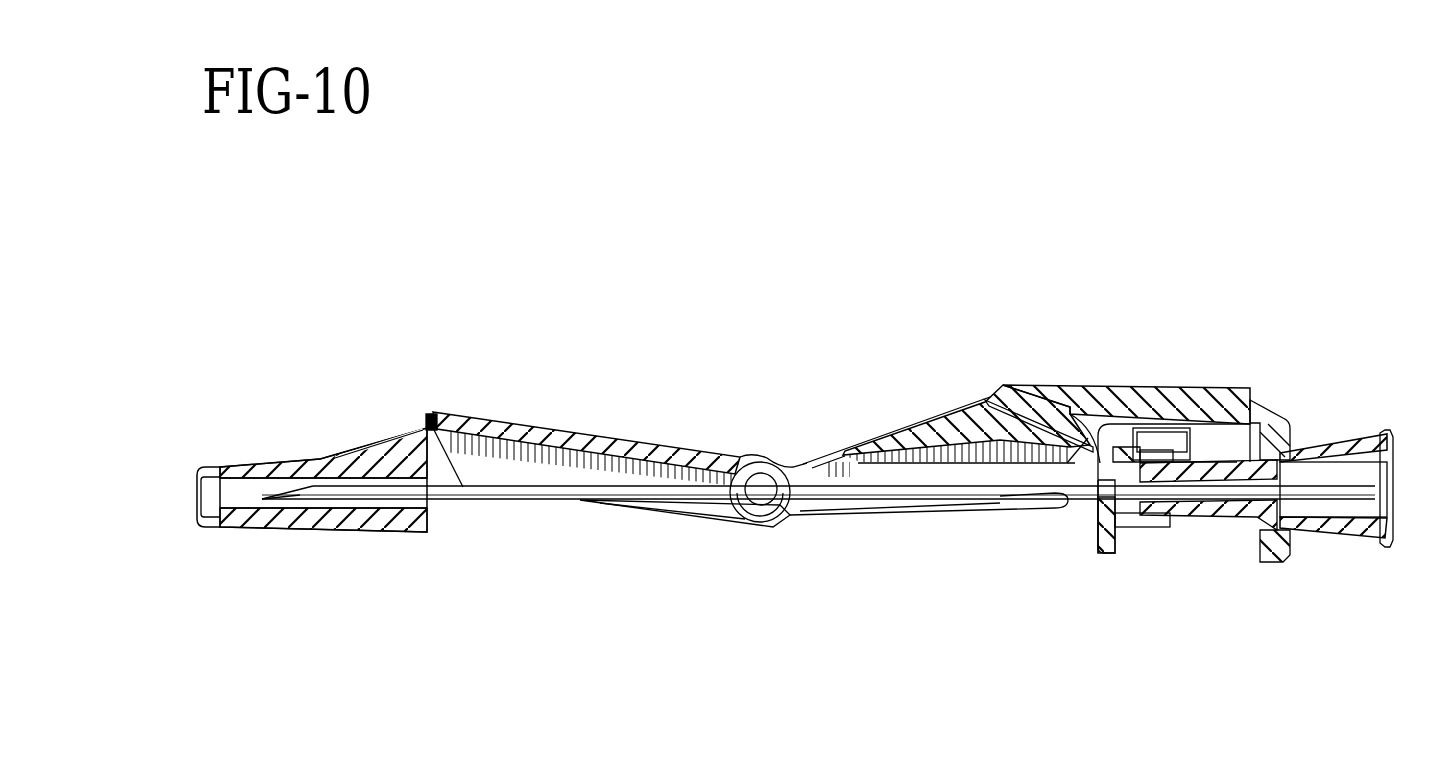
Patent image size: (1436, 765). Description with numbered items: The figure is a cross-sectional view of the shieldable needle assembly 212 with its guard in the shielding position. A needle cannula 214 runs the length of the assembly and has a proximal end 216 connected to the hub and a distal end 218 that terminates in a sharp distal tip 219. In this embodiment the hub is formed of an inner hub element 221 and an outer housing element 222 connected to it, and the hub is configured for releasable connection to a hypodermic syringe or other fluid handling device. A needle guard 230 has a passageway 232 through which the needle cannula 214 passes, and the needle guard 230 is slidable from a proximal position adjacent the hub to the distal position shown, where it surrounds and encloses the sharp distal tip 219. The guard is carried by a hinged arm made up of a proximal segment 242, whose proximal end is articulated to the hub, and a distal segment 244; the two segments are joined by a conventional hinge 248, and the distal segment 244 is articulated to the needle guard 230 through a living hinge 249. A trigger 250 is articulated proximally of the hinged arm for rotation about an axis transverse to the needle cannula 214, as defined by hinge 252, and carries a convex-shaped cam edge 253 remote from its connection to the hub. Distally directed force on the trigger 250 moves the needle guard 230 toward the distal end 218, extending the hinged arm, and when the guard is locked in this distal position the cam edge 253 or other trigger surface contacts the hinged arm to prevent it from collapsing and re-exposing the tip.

The shieldable needle assembly 212 is at (1068, 232).
The needle cannula 214 is at (687, 498).
The proximal end 216 is at (960, 525).
The distal end 218 is at (353, 492).
The sharp distal tip 219 is at (285, 492).
The inner hub element 221 is at (1343, 537).
The outer housing element 222 is at (1110, 557).
The needle guard 230 is at (368, 532).
The passageway 232 is at (227, 495).
The proximal segment 242 is at (893, 435).
The distal segment 244 is at (620, 442).
The hinge 248 is at (760, 477).
The living hinge 249 is at (430, 427).
The trigger 250 is at (1132, 390).
The hinge 252 is at (1287, 397).
The convex-shaped cam edge 253 is at (1000, 395).